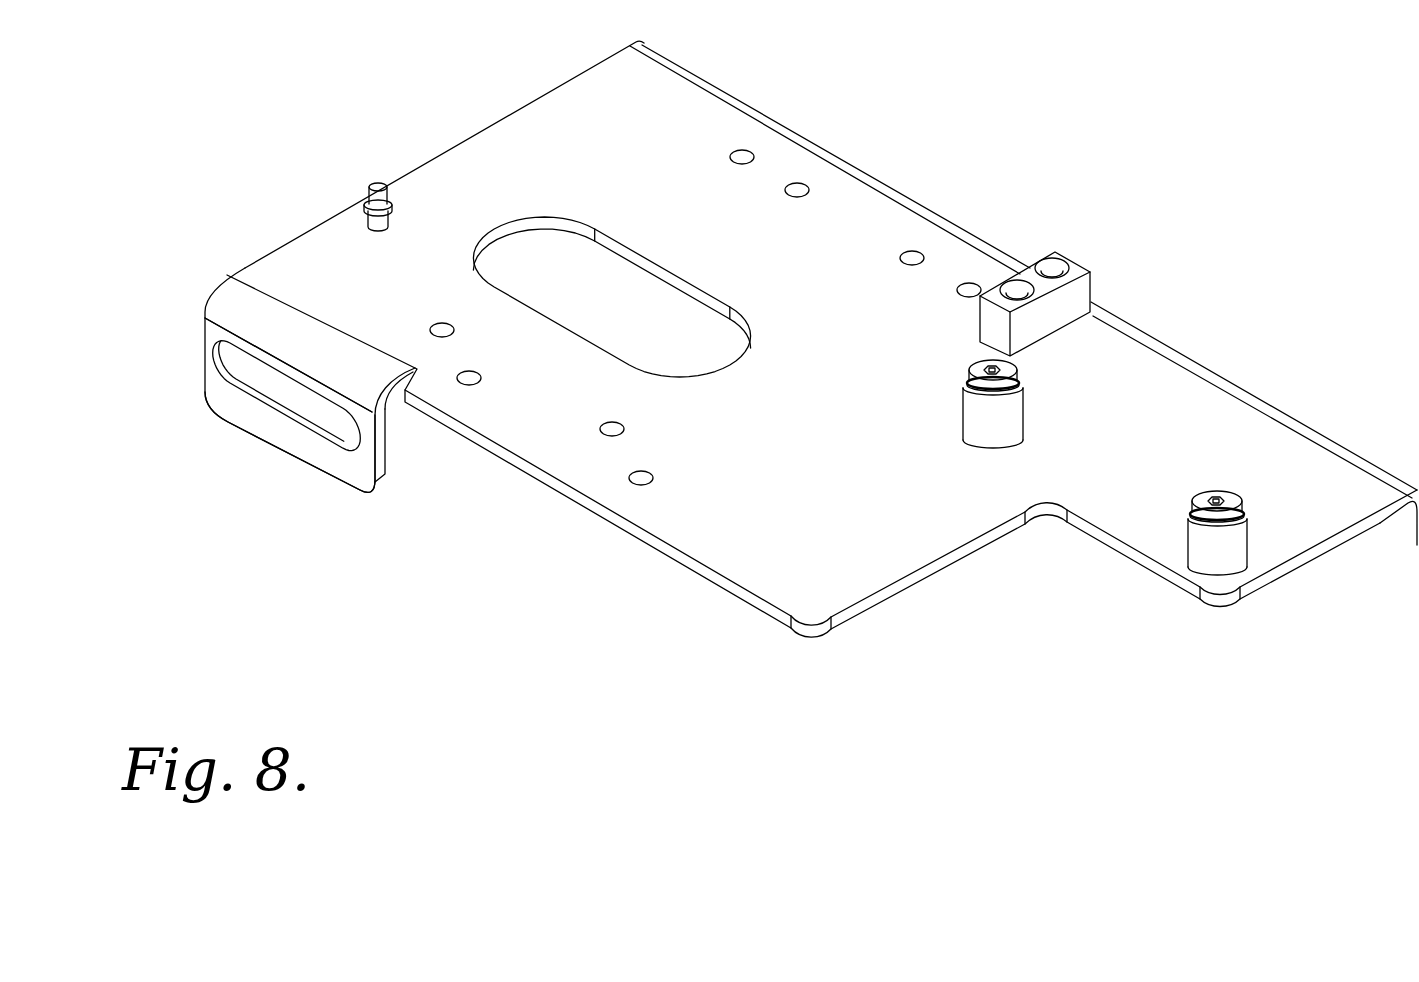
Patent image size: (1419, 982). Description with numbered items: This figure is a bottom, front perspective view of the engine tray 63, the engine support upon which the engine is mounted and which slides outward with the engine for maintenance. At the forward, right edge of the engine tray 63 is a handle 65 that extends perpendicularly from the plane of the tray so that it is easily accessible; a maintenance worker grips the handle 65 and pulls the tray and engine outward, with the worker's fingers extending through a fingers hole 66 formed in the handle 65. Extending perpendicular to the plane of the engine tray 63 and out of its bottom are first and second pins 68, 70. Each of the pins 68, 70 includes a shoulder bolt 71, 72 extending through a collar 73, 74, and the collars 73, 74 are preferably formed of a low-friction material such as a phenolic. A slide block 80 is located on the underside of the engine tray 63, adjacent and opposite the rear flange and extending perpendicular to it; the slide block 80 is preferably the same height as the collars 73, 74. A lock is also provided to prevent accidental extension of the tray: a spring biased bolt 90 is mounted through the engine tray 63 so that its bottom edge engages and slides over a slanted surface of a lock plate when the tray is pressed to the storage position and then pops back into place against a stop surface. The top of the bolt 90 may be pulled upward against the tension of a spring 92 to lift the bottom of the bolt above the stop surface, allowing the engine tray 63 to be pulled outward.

The engine tray 63 is at (1213, 320).
The handle 65 is at (293, 443).
The fingers hole 66 is at (245, 371).
The first pin 68 is at (1243, 523).
The second pin 70 is at (1009, 417).
The shoulder bolt 71 is at (1210, 489).
The shoulder bolt 72 is at (966, 366).
The collar 73 is at (1212, 553).
The collar 74 is at (1015, 420).
The slide block 80 is at (1077, 289).
The spring biased bolt 90 is at (373, 183).
The spring 92 is at (362, 210).